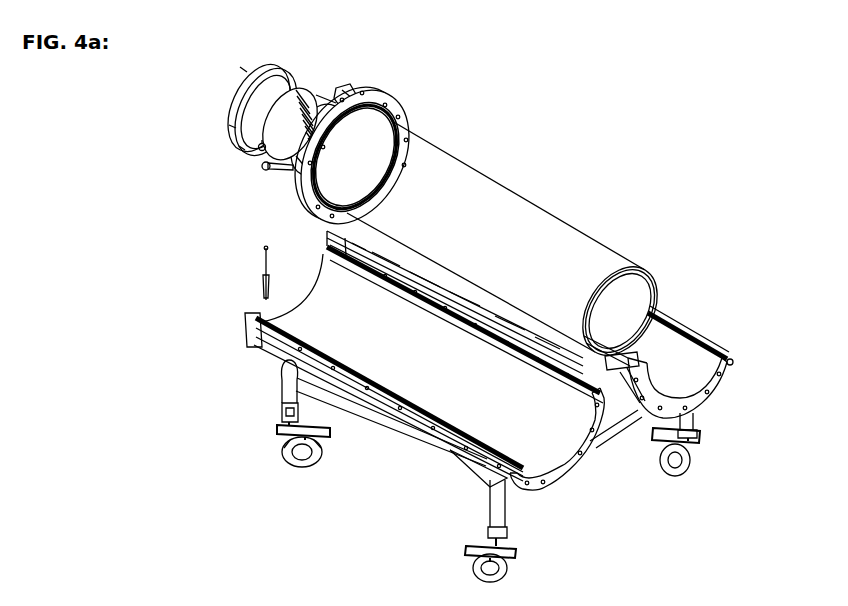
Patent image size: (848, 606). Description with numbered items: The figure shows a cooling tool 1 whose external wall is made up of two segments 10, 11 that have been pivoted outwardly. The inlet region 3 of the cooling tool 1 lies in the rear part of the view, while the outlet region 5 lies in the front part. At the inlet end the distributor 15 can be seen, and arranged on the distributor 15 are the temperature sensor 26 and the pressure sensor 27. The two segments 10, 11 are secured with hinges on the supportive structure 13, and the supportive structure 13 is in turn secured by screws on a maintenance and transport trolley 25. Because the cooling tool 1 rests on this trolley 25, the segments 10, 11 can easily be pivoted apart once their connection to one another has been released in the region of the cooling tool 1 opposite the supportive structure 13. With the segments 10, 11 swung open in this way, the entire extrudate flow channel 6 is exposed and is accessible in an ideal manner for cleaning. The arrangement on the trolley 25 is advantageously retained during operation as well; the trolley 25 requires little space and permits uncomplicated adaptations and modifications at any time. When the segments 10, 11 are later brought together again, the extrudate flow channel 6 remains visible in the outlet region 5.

The cooling tool 1 is at (568, 131).
The inlet region 3 is at (208, 109).
The outlet region 5 is at (661, 304).
The extrudate flow channel 6 is at (448, 180).
The segment of the external wall 10 is at (688, 368).
The segment of the external wall 11 is at (552, 440).
The supportive structure 13 is at (637, 415).
The distributor 15 is at (290, 95).
The maintenance and transport trolley 25 is at (455, 477).
The temperature sensor 26 is at (326, 86).
The pressure sensor 27 is at (248, 163).